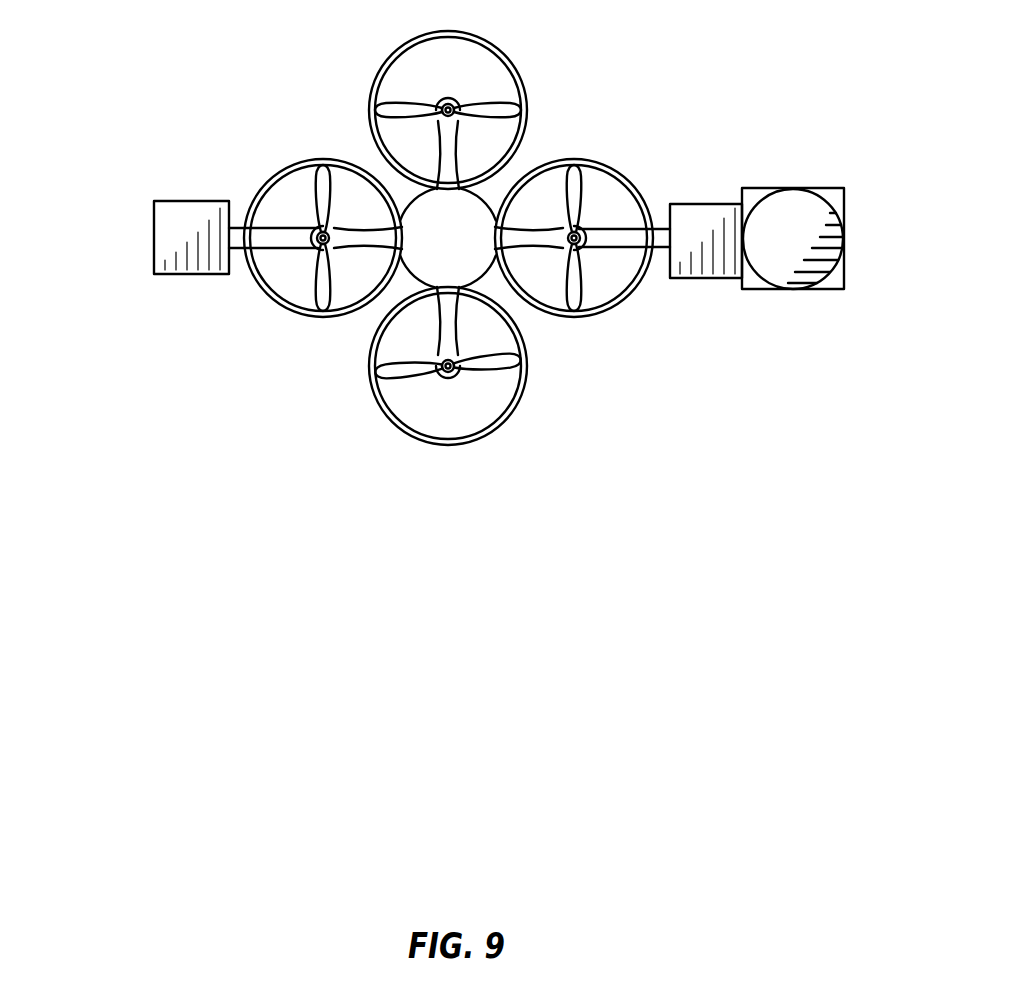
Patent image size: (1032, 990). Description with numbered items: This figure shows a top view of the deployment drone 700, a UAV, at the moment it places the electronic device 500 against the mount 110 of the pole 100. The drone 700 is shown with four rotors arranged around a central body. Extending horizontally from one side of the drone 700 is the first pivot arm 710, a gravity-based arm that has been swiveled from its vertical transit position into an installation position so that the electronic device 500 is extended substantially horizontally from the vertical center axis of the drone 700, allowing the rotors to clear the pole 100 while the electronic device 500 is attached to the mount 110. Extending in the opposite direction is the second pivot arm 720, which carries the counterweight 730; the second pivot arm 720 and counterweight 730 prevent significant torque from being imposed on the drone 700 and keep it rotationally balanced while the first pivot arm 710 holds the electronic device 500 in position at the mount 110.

The deployment drone 700 is at (307, 158).
The pivot arm 710 is at (597, 250).
The second pivot arm 720 is at (235, 250).
The counterweight 730 is at (213, 201).
The electronic device 500 is at (715, 204).
The pole 100 is at (802, 205).
The mount 110 is at (757, 291).